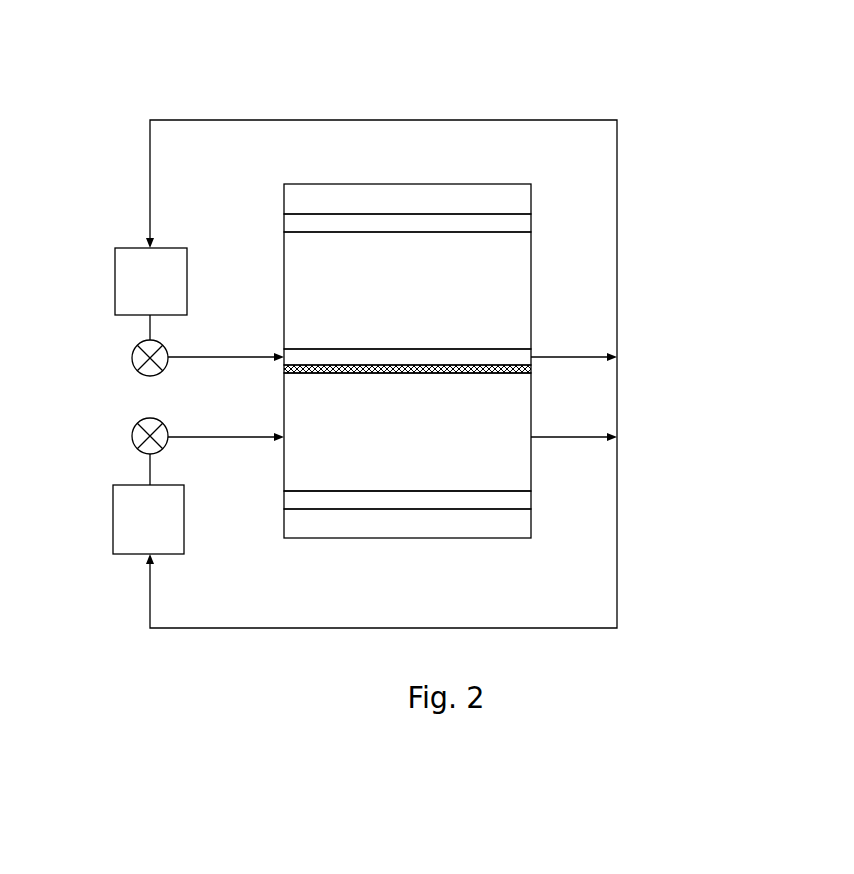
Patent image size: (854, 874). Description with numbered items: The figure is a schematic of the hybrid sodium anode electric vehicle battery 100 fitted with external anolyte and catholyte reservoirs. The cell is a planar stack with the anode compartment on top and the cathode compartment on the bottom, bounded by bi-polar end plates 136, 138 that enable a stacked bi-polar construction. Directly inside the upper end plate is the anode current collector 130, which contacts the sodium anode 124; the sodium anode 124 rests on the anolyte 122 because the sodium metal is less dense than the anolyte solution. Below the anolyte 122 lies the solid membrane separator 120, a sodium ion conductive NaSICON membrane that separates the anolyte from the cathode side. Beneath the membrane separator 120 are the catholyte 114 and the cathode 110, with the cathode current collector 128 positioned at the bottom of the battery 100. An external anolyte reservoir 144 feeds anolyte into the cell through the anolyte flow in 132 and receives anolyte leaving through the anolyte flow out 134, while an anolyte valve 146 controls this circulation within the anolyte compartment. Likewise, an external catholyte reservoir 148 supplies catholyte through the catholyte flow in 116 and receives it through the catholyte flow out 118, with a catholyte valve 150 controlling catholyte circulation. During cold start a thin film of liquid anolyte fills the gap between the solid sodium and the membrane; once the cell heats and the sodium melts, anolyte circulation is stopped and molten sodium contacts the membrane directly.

The hybrid battery 100 is at (294, 79).
The cathode 110 is at (407, 461).
The catholyte 114 is at (407, 402).
The catholyte flow in 116 is at (213, 437).
The catholyte flow out 118 is at (573, 437).
The membrane separator 120 is at (465, 373).
The anolyte 122 is at (497, 356).
The sodium anode 124 is at (407, 290).
The cathode current collector 128 is at (531, 498).
The anode current collector 130 is at (531, 229).
The anolyte flow in 132 is at (205, 357).
The anolyte flow out 134 is at (578, 358).
The bi-polar end plate 136 is at (531, 201).
The bi-polar end plate 138 is at (531, 530).
The external anolyte reservoir 144 is at (151, 289).
The anolyte valve 146 is at (132, 356).
The external catholyte reservoir 148 is at (148, 509).
The catholyte valve 150 is at (132, 437).